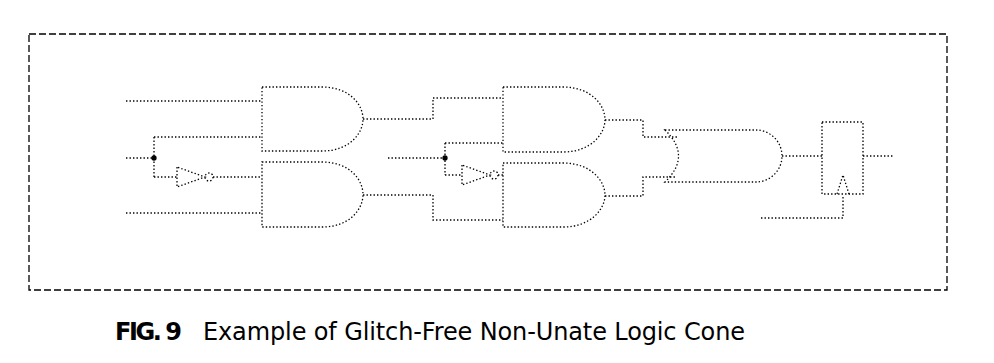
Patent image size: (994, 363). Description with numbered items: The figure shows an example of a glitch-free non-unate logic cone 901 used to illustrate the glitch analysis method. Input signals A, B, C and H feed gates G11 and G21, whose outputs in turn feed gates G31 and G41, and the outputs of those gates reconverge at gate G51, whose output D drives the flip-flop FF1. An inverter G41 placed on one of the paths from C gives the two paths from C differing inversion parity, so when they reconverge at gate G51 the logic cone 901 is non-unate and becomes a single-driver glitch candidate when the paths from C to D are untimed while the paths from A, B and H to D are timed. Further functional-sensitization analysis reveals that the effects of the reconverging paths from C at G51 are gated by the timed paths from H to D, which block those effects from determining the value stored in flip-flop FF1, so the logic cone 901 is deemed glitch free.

The logic cone 901 is at (941, 64).
The gate G11 is at (312, 119).
The gate G21 is at (312, 194).
The gate G31 is at (554, 119).
The inverter G41 is at (391, 195).
The gate G51 is at (723, 156).
The flip-flop FF1 is at (842, 158).